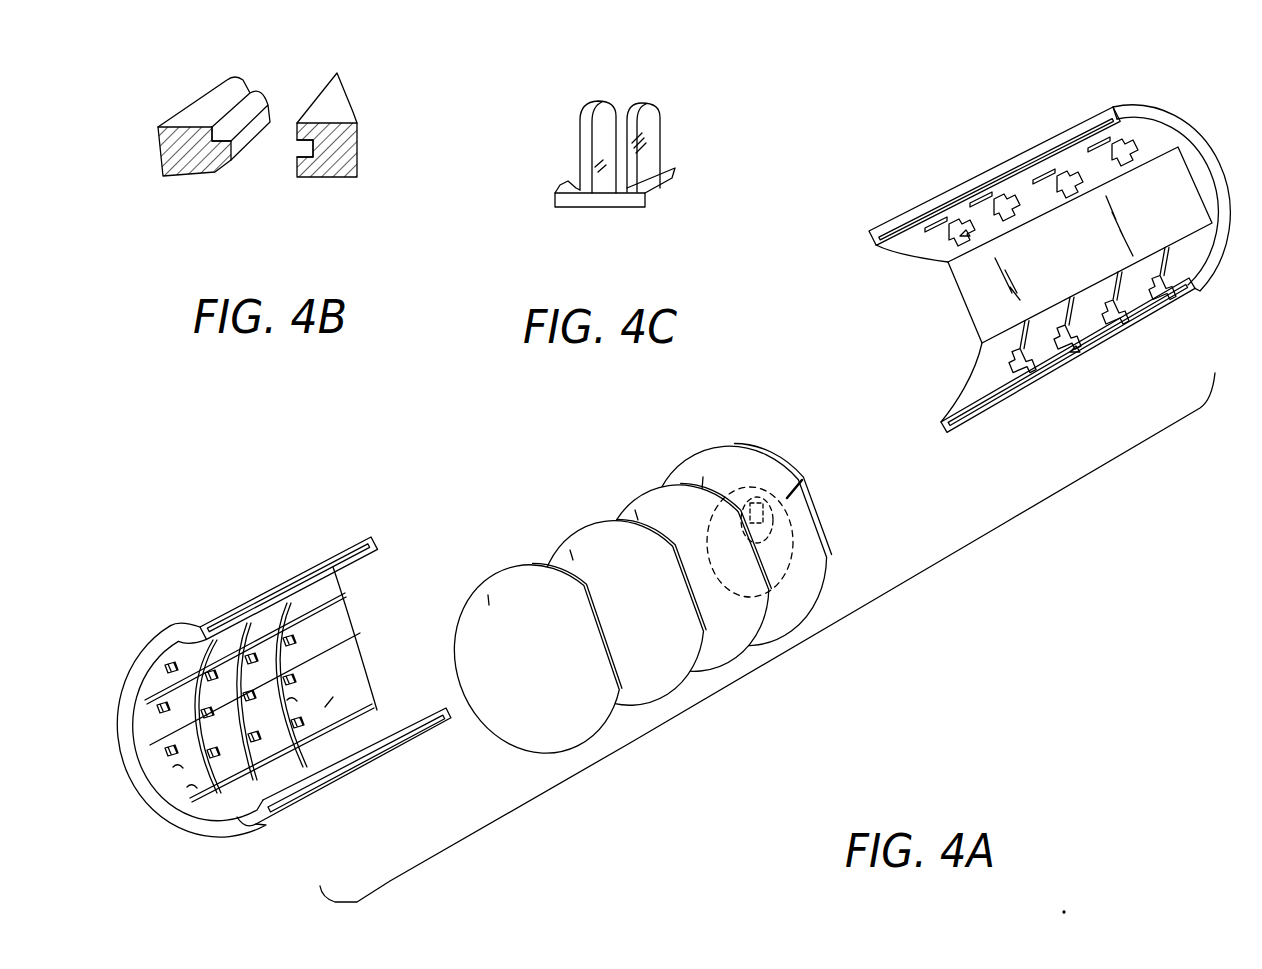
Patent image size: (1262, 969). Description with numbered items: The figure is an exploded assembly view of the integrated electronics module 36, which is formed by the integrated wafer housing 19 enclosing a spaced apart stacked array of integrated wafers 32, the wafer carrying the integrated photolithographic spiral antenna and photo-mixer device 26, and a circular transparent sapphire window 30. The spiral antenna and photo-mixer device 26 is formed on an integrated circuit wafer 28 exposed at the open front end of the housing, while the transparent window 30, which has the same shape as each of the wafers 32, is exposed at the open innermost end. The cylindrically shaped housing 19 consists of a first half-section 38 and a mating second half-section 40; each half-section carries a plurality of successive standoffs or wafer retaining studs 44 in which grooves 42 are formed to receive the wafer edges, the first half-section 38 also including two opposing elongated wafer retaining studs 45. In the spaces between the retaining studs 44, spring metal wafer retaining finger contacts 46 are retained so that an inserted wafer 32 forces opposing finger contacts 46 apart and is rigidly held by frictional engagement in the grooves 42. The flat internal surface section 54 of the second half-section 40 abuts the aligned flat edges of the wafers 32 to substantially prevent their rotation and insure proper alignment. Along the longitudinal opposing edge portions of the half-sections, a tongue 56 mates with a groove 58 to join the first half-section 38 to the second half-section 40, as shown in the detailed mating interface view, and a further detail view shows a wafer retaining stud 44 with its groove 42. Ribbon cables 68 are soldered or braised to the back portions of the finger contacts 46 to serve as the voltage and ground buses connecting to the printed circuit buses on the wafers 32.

In FIG. 4A, the integrated wafer housing 19 is at (1126, 88).
In FIG. 4A, the integrated photolithographic spiral antenna and photo-mixer device 26 is at (802, 480).
In FIG. 4A, the integrated circuit wafer 28 is at (773, 445).
In FIG. 4A, the transparent sapphire window 30 is at (486, 588).
In FIG. 4A, the integrated wafers 32 is at (567, 537).
In FIG. 4A, the integrated electronics module 36 is at (968, 506).
In FIG. 4B, the first half-section 38 is at (172, 172).
In FIG. 4A, the first half-section 38 is at (112, 710).
In FIG. 4B, the second half-section 40 is at (337, 92).
In FIG. 4A, the second half-section 40 is at (1222, 272).
In FIG. 4C, the grooves 42 is at (606, 168).
In FIG. 4A, the grooves 42 is at (325, 707).
In FIG. 4C, the wafer retaining studs 44 is at (650, 143).
In FIG. 4A, the wafer retaining studs 44 is at (1008, 373).
In FIG. 4A, the elongated wafer retaining studs 45 is at (168, 643).
In FIG. 4A, the wafer retaining finger contacts 46 is at (963, 233).
In FIG. 4A, the flat internal surface section 54 is at (1147, 190).
In FIG. 4B, the tongue 56 is at (223, 164).
In FIG. 4A, the tongue 56 is at (1142, 323).
In FIG. 4B, the groove 58 is at (300, 152).
In FIG. 4A, the groove 58 is at (977, 188).
In FIG. 4A, the ribbon cables 68 is at (265, 610).